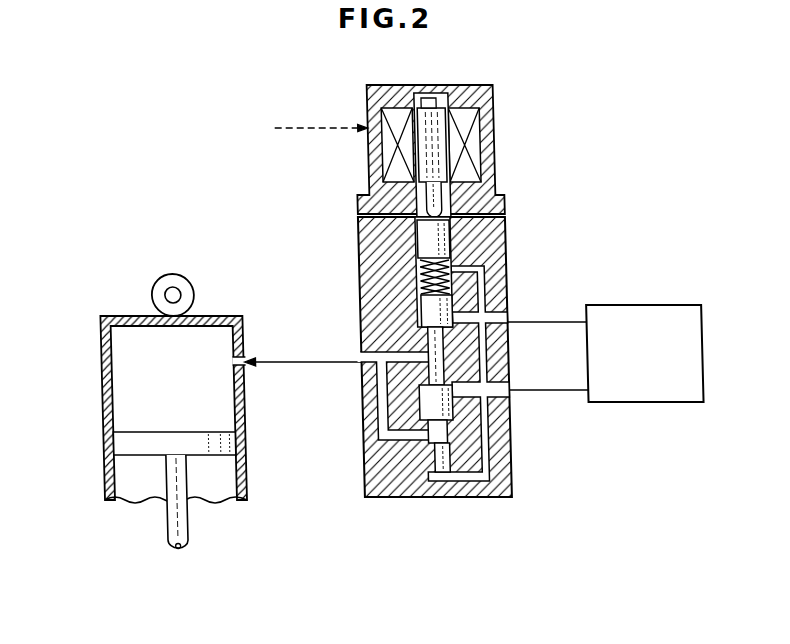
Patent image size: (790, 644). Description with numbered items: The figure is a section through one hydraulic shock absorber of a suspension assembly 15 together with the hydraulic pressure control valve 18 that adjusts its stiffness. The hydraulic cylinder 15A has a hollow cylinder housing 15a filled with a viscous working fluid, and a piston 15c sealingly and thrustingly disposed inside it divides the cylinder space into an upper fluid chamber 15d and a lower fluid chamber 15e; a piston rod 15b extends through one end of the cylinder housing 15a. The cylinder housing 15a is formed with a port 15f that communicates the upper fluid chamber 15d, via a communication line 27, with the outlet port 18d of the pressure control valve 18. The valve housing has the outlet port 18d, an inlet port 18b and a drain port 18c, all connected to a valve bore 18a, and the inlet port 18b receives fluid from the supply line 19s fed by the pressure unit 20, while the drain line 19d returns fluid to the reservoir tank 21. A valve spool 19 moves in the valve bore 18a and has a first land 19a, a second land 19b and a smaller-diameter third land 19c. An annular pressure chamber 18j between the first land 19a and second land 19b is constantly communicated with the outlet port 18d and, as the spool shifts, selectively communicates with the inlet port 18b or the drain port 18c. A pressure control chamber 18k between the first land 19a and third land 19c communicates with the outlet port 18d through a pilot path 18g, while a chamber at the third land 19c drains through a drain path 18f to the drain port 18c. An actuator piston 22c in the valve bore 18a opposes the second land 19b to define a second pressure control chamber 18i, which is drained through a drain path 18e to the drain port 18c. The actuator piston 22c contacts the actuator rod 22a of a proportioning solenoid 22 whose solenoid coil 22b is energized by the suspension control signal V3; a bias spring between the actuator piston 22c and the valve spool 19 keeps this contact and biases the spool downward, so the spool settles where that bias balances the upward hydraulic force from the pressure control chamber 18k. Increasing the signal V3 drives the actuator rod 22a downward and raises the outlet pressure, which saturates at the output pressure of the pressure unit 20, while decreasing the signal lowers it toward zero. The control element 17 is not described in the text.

The suspension assembly 15 is at (174, 395).
The cylinder housing 15a is at (104, 400).
The piston rod 15b is at (181, 525).
The piston 15c is at (234, 440).
The upper fluid chamber 15d is at (127, 357).
The lower fluid chamber 15e is at (114, 488).
The port 15f is at (241, 355).
The hydraulic cylinder 15A is at (90, 443).
The communication line 27 is at (276, 366).
The control valve 17 is at (616, 185).
The pressure control valve 18 is at (475, 360).
The valve bore 18a is at (422, 240).
The inlet port 18b is at (500, 396).
The drain port 18c is at (481, 300).
The outlet port 18d is at (395, 357).
The drain path 18e is at (472, 266).
The drain path 18f is at (467, 500).
The pilot path 18g is at (386, 462).
The second pressure control chamber 18i is at (502, 237).
The annular pressure chamber 18j is at (490, 318).
The pressure control chamber 18k is at (436, 500).
The valve spool 19 is at (381, 412).
The first land 19a is at (430, 400).
The second land 19b is at (422, 307).
The third land 19c is at (417, 467).
The drain line 19d is at (545, 323).
The supply line 19s is at (534, 390).
The pressure unit 20 is at (635, 305).
The reservoir tank 21 is at (424, 278).
The proportioning solenoid 22 is at (455, 131).
The actuator rod 22a is at (439, 205).
The solenoid coil 22b is at (470, 112).
The actuator piston 22c is at (421, 222).
The suspension control signal V3 is at (321, 117).